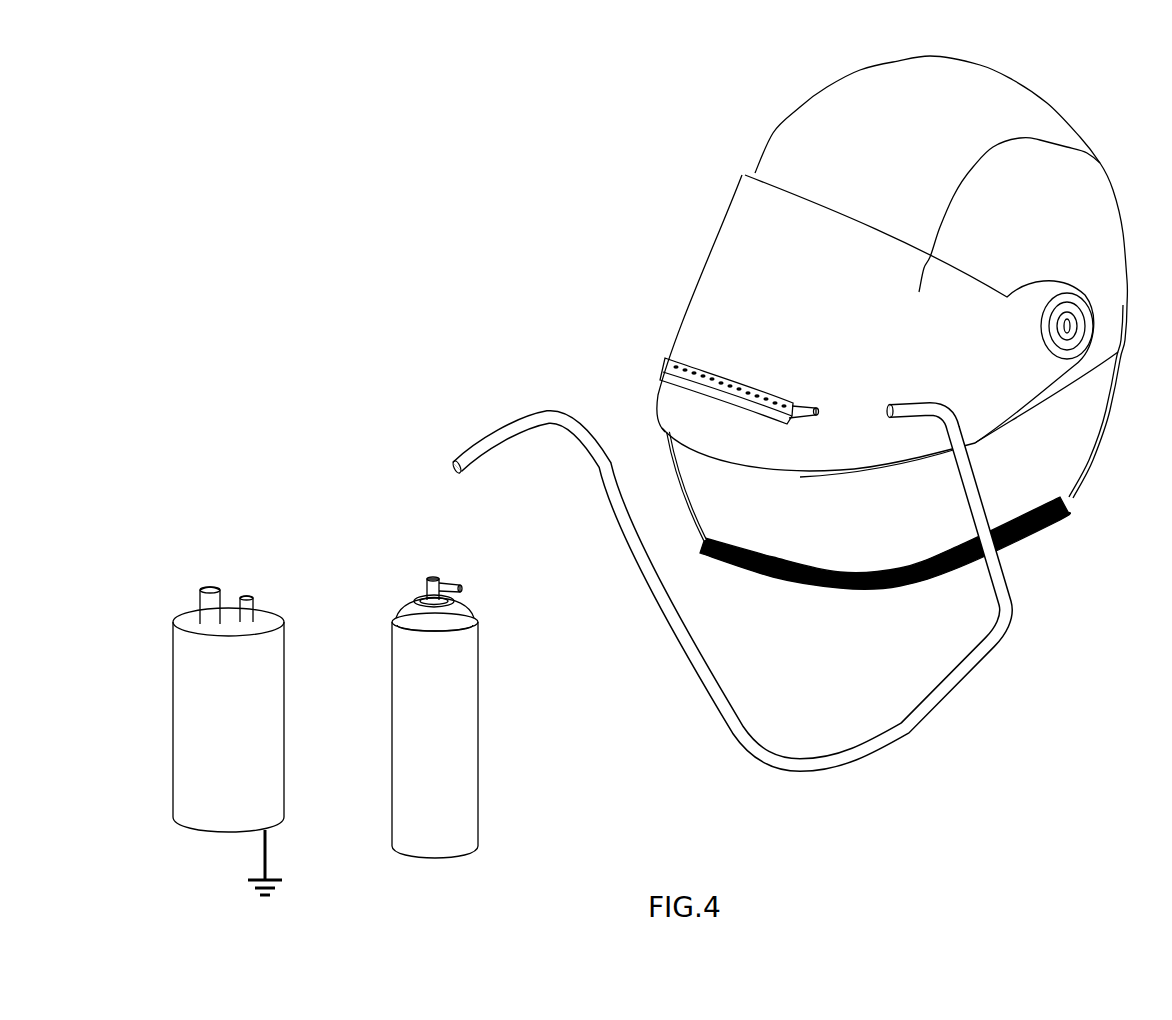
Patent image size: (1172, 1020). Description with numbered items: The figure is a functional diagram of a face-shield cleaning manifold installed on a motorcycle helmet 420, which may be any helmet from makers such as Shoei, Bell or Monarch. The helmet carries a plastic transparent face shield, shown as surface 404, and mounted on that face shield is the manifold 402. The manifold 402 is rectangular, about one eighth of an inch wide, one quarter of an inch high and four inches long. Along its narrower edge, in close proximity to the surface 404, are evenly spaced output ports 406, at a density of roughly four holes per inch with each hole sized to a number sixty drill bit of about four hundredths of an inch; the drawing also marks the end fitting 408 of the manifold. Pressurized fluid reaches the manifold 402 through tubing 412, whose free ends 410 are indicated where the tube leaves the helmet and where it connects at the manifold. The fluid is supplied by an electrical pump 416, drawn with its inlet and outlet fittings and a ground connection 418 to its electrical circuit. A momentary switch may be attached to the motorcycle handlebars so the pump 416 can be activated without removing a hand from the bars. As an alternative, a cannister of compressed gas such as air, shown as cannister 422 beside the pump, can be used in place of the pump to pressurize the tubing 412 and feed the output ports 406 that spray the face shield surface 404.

The manifold 402 is at (650, 352).
The surface 404 is at (705, 224).
The output ports 406 is at (687, 348).
The nozzle tip 408 is at (805, 437).
The tube 410 is at (875, 434).
The tubing 412 is at (594, 524).
The electrical pump 416 is at (310, 682).
The ground 418 is at (286, 850).
The helmet 420 is at (770, 103).
The spray can 422 is at (500, 740).